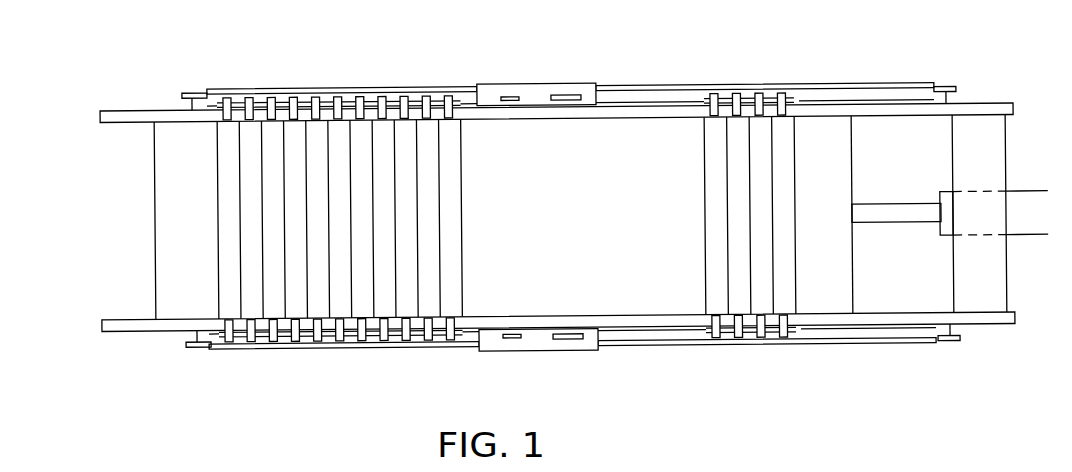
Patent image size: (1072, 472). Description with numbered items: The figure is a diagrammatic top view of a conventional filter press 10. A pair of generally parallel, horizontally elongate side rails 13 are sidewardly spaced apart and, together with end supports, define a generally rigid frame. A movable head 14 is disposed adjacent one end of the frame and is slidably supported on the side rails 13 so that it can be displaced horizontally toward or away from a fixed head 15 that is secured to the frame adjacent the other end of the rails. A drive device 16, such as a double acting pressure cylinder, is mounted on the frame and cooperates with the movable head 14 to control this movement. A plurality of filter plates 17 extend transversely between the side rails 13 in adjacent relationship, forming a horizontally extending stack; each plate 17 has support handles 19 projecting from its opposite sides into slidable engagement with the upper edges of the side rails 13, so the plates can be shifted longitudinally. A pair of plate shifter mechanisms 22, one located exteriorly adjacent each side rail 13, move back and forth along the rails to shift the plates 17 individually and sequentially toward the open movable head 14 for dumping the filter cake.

The filter press 10 is at (561, 226).
The side rails 13 is at (654, 110).
The movable head 14 is at (817, 297).
The fixed head 15 is at (160, 208).
The drive device 16 is at (916, 207).
The filter plates 17 is at (427, 207).
The support handles 19 is at (718, 96).
The plate shifter mechanisms 22 is at (544, 81).